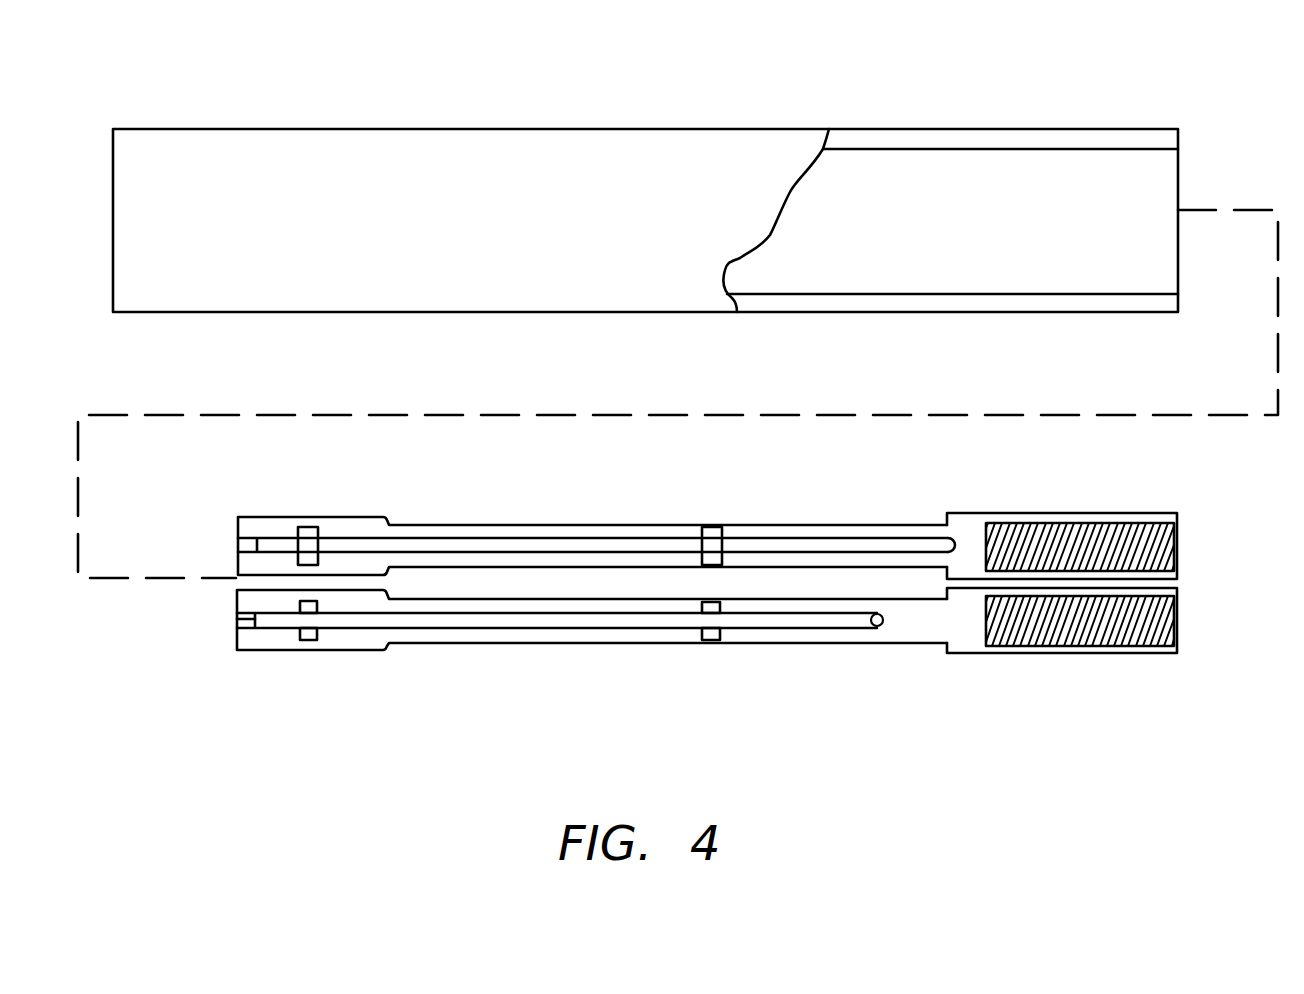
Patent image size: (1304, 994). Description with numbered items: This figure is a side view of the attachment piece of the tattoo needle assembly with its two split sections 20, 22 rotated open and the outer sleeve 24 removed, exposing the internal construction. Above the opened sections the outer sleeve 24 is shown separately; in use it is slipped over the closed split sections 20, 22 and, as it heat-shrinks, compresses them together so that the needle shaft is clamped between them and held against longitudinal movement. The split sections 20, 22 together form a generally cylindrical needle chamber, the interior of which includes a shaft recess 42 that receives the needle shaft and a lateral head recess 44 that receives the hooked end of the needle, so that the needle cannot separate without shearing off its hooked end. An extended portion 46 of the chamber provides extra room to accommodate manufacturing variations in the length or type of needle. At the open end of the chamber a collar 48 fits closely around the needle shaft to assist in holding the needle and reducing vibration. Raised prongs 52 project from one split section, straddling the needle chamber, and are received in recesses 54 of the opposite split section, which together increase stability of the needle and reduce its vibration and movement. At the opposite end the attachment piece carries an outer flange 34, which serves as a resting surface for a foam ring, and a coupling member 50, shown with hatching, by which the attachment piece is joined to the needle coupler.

The outer sleeve 24 is at (440, 130).
The split section 20 is at (278, 528).
The split section 22 is at (267, 641).
The shaft recess 42 is at (422, 545).
The extended portion 46 is at (868, 545).
The recesses 54 is at (307, 532).
The raised prongs 52 is at (316, 604).
The lateral head recess 44 is at (884, 624).
The collar 48 is at (245, 619).
The outer flange 34 is at (967, 644).
The coupling member 50 is at (1060, 653).